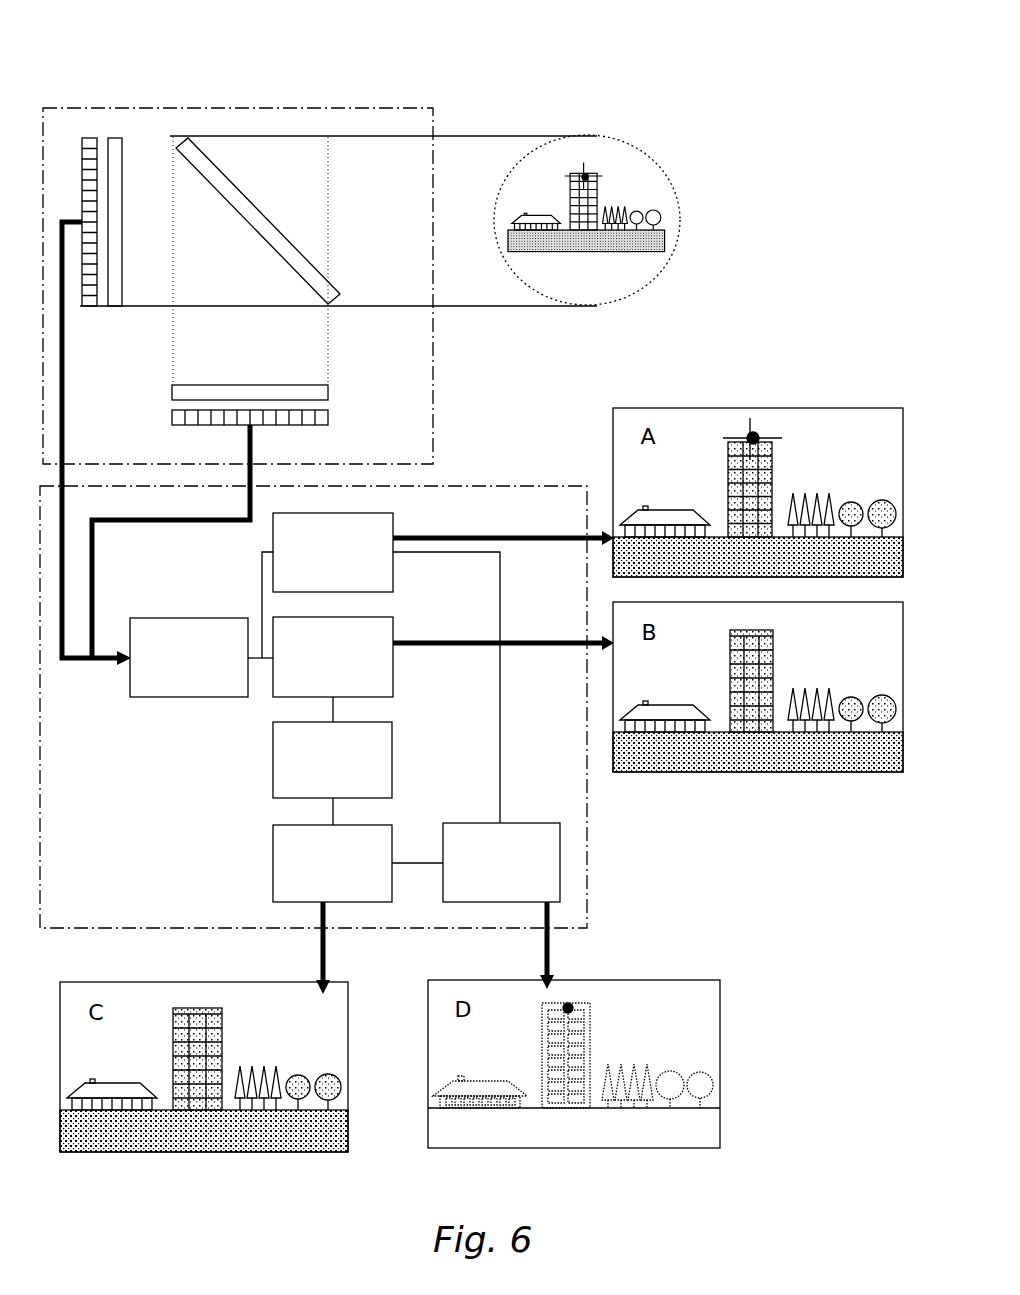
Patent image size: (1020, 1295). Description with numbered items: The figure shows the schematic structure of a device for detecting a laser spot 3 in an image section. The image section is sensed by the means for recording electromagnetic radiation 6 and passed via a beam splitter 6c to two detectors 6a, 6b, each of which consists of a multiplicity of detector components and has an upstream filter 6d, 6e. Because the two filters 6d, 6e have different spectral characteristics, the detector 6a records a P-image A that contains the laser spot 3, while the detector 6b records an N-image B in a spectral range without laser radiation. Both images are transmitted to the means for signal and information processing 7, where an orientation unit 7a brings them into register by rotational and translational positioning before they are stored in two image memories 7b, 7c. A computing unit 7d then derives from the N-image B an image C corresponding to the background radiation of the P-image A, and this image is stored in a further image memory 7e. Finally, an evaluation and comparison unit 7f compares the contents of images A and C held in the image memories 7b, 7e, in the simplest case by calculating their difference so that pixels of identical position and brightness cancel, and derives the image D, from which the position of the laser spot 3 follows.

The laser spot 3 is at (709, 551).
The means for recording electromagnetic radiation 6 is at (322, 246).
The detector 6a is at (169, 159).
The detector 6b is at (367, 398).
The beam splitter 6c is at (288, 185).
The filter 6d is at (192, 186).
The filter 6e is at (367, 367).
The means for signal and information processing 7 is at (313, 685).
The orientation unit 7a is at (189, 657).
The image memory 7b is at (333, 552).
The image memory 7c is at (333, 657).
The computing unit 7d is at (332, 760).
The image memory 7e is at (332, 863).
The evaluation and comparison unit 7f is at (501, 862).